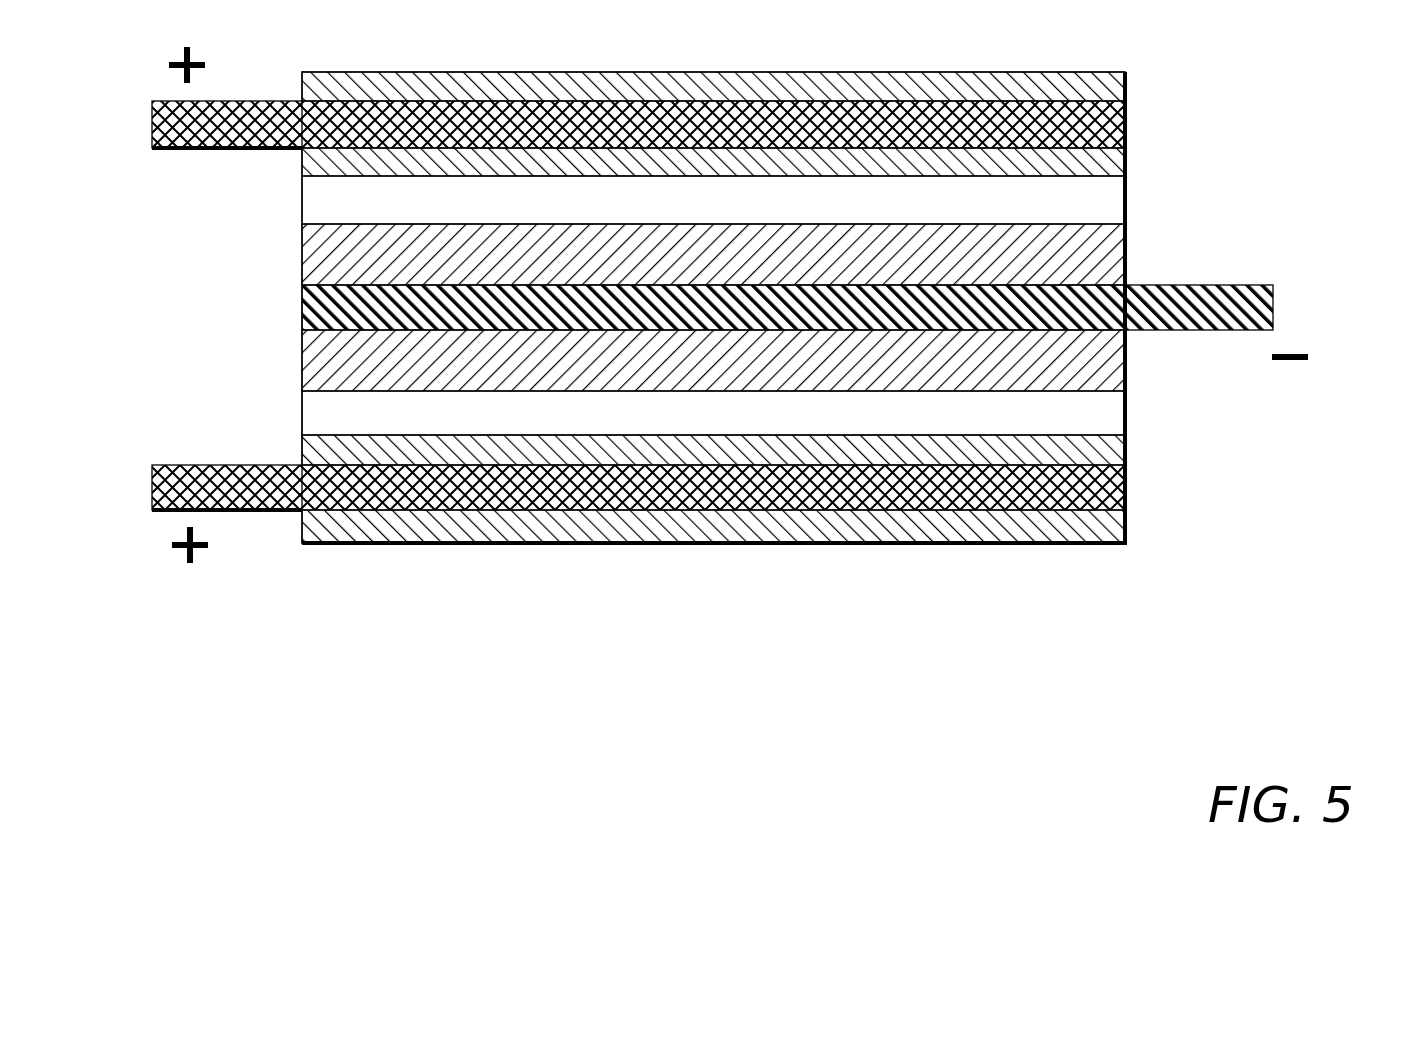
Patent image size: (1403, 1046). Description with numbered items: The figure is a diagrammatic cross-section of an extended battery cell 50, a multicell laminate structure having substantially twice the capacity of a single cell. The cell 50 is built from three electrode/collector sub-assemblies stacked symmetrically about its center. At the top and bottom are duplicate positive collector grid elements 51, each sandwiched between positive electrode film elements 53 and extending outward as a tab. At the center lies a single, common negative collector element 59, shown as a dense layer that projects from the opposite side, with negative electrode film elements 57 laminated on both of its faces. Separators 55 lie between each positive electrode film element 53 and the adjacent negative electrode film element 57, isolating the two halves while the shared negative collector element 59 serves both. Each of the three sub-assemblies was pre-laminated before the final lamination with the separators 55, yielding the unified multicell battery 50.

The extended battery cell 50 is at (586, 583).
The positive collector grid element 51 is at (1125, 137).
The positive electrode film element 53 is at (1117, 90).
The separator 55 is at (1125, 210).
The negative electrode film element 57 is at (307, 250).
The common negative collector element 59 is at (302, 308).